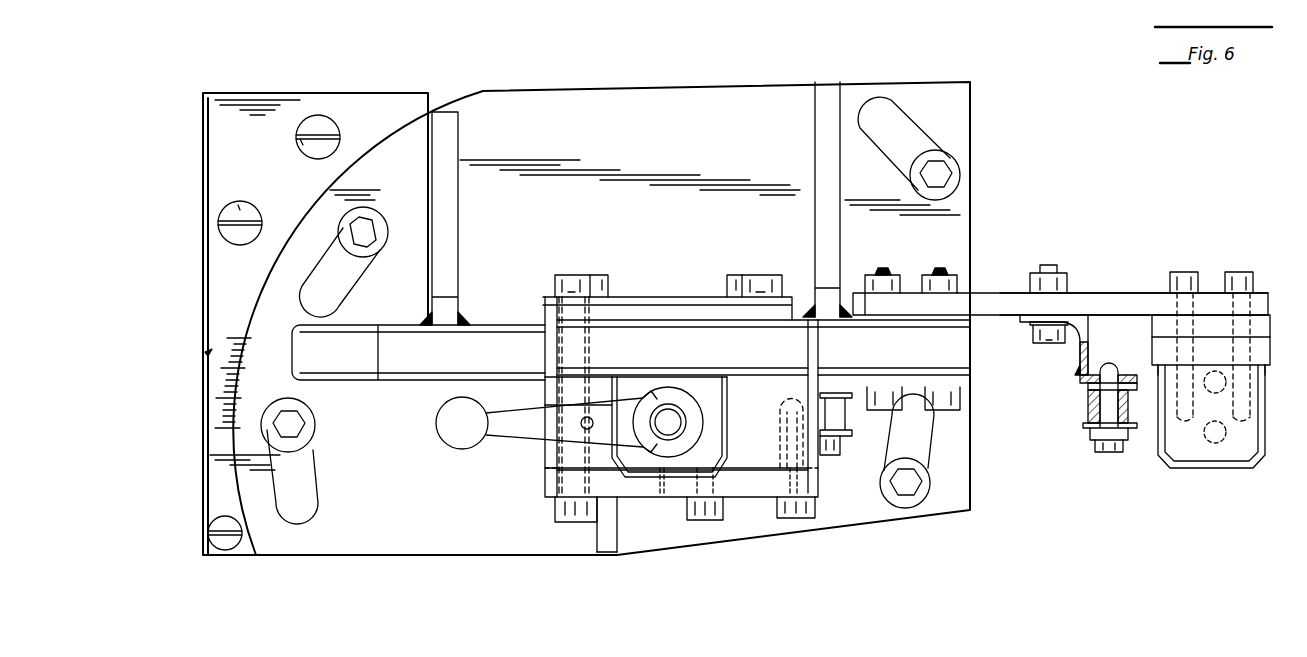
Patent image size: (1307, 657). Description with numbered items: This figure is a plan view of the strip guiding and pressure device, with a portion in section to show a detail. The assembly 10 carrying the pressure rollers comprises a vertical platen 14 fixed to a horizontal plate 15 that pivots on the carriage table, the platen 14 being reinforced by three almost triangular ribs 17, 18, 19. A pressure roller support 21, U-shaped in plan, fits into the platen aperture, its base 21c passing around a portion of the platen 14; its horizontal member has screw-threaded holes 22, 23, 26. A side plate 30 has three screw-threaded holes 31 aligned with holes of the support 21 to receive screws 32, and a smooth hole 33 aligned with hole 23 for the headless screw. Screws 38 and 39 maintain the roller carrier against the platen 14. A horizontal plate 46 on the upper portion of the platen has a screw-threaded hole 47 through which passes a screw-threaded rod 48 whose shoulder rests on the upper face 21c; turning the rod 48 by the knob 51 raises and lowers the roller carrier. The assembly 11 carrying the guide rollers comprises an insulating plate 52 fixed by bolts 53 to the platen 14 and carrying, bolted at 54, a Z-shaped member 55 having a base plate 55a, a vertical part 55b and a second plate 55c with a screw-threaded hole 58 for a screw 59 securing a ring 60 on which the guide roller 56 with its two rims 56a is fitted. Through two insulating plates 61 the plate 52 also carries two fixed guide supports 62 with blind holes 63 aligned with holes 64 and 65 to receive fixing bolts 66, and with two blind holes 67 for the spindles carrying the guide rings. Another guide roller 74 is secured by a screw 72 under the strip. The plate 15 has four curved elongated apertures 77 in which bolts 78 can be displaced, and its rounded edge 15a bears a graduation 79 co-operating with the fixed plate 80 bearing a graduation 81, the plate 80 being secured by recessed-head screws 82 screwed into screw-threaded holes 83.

The assembly 10 is at (652, 297).
The assembly 11 is at (1095, 292).
The vertical platen 14 is at (631, 350).
The horizontal plate 15 is at (369, 550).
The rounded edge 15a is at (250, 297).
The rib 17 is at (598, 566).
The rib 18 is at (450, 150).
The rib 19 is at (815, 151).
The pressure roller support 21 is at (543, 449).
The base of the U 21c is at (766, 383).
The screw-threaded hole 22 is at (555, 357).
The screw-threaded hole 23 is at (680, 461).
The screw-threaded hole 26 is at (781, 428).
The side plate 30 is at (629, 497).
The screw-threaded holes 31 is at (543, 488).
The screws 32 is at (553, 515).
The smooth hole 33 is at (665, 497).
The screws 38 is at (602, 277).
The screws 39 is at (560, 275).
The horizontal plate 46 is at (627, 378).
The screw-threaded hole 47 is at (690, 403).
The screw-threaded rod 48 is at (667, 408).
The knob 51 is at (546, 421).
The insulating plate 52 is at (993, 298).
The bolts 53 is at (925, 275).
The bolts 54 is at (1062, 278).
The Z-shaped member 55 is at (1025, 322).
The base plate 55a is at (1050, 345).
The vertical part 55b is at (1084, 330).
The second plate 55c is at (1114, 370).
The guide roller 56 is at (1083, 418).
The rims 56a is at (1082, 392).
The screw-threaded hole 58 is at (1078, 378).
The screw 59 is at (1097, 448).
The ring 60 is at (1117, 454).
The insulating plates 61 is at (1260, 330).
The fixed guide supports 62 is at (1250, 440).
The screw-threaded horizontal blind holes 63 is at (1258, 375).
The holes 64 is at (1255, 316).
The holes 65 is at (1258, 292).
The fixing bolts 66 is at (1230, 272).
The blind holes 67 is at (1210, 401).
The screw 72 is at (836, 458).
The guide roller 74 is at (838, 414).
The curved elongated apertures 77 is at (348, 281).
The bolts 78 is at (371, 212).
The graduation 79 is at (245, 362).
The fixed plate 80 is at (212, 284).
The graduation 81 is at (205, 352).
The screws 82 is at (322, 130).
The screw-threaded holes 83 is at (240, 202).